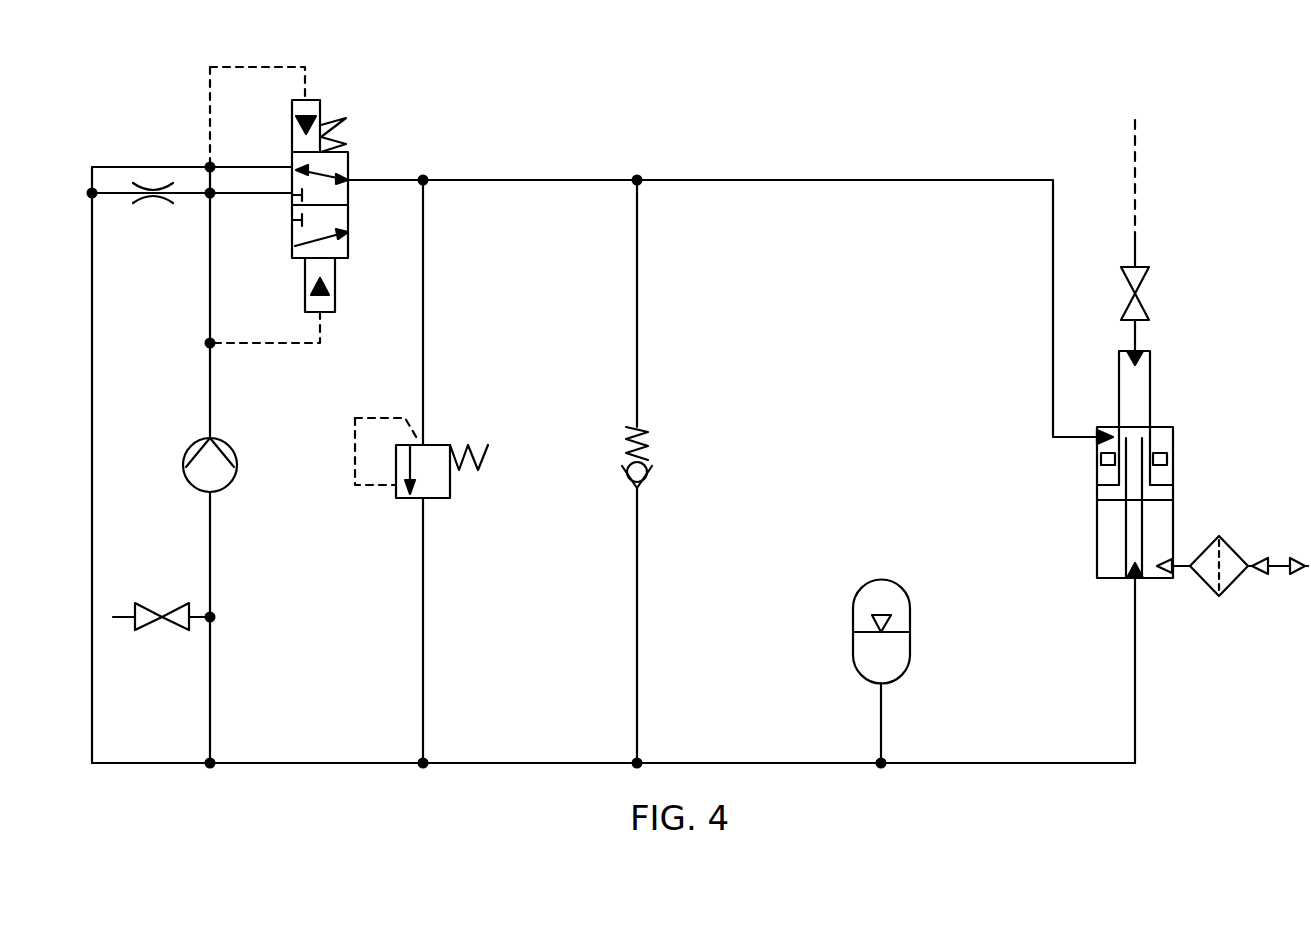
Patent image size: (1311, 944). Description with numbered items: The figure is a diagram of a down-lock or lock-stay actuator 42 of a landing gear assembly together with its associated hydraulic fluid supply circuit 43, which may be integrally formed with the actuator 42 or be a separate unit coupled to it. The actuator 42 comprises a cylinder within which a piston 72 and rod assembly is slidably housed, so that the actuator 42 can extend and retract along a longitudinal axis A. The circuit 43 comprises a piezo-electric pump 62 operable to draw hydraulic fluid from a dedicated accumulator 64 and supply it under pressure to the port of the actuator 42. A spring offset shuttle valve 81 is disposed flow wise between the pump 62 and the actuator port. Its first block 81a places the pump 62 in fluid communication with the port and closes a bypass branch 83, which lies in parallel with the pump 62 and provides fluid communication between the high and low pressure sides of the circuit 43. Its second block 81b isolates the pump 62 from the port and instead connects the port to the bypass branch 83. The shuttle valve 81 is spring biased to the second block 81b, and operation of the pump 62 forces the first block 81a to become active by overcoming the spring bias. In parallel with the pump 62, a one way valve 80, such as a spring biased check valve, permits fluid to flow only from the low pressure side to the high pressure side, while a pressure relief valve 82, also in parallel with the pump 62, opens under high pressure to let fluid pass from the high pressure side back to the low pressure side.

The down-lock actuator 42 is at (1202, 441).
The hydraulic fluid supply circuit 43 is at (1050, 128).
The piezo-electric pump 62 is at (222, 475).
The accumulator 64 is at (905, 650).
The piston 72 is at (1152, 402).
The one way valve 80 is at (645, 452).
The spring offset shuttle valve 81 is at (372, 171).
The first block 81a is at (335, 248).
The second block 81b is at (340, 160).
The pressure relief valve 82 is at (452, 487).
The bypass branch 83 is at (90, 380).
The longitudinal axis A is at (1137, 160).